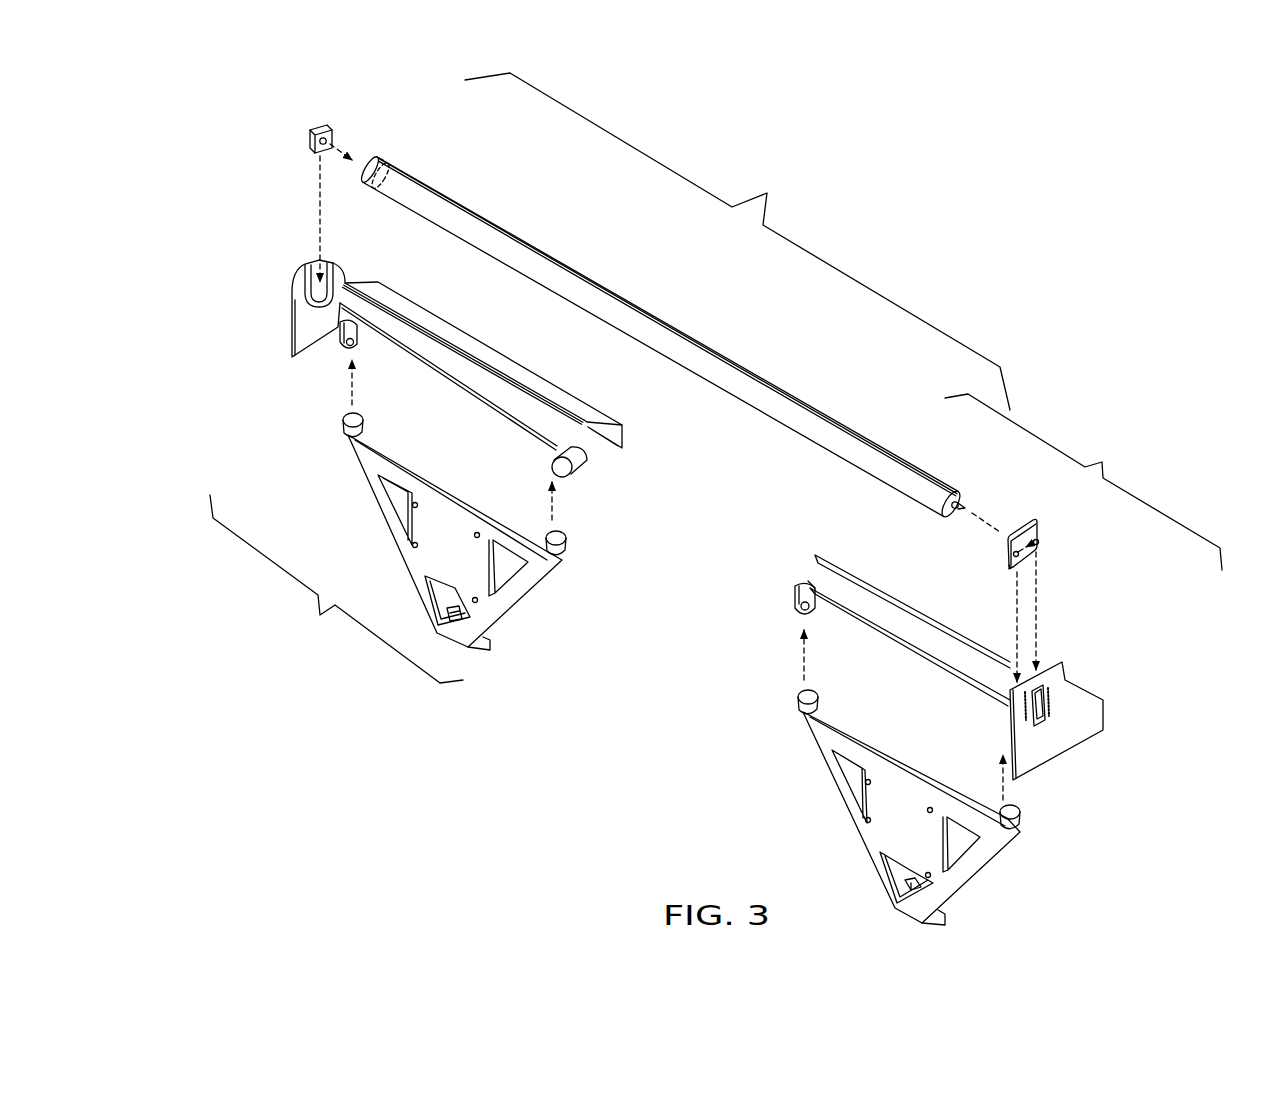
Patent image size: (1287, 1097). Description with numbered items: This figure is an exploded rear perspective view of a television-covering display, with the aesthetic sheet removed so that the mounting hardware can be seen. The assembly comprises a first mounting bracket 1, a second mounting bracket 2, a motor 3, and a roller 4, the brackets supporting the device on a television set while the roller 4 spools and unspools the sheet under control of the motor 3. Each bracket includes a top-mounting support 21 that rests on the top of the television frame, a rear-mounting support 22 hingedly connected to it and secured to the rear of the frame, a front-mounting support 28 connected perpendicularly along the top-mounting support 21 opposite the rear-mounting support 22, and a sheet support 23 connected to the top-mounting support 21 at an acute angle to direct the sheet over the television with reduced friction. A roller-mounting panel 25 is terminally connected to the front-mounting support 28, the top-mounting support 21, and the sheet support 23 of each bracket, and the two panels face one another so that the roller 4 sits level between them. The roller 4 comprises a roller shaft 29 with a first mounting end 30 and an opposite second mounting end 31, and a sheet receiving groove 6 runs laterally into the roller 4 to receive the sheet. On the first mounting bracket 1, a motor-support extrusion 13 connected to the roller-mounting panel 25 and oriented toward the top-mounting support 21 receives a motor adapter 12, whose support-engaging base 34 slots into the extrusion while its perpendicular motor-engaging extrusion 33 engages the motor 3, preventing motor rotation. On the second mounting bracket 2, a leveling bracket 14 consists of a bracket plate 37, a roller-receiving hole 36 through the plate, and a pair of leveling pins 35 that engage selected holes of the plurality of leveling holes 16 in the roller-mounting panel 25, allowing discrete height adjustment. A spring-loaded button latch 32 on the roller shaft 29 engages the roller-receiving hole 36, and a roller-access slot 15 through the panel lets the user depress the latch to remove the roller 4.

The first mounting bracket 1 is at (1083, 482).
The second mounting bracket 2 is at (336, 589).
The motor 3 is at (397, 175).
The roller 4 is at (737, 241).
The sheet receiving groove 6 is at (693, 337).
The motor adapter 12 is at (319, 178).
The motor-support extrusion 13 is at (305, 280).
The leveling bracket 14 is at (1038, 573).
The roller-access slot 15 is at (1084, 713).
The plurality of leveling holes 16 is at (1066, 707).
The top-mounting support 21 is at (583, 438).
The rear-mounting support 22 is at (488, 597).
The sheet support 23 is at (675, 494).
The roller-mounting panel 25 is at (677, 524).
The front-mounting support 28 is at (622, 437).
The roller shaft 29 is at (707, 367).
The first mounting end 30 is at (380, 156).
The second mounting end 31 is at (945, 507).
The spring-loaded button latch 32 is at (960, 506).
The motor-engaging extrusion 33 is at (330, 138).
The support-engaging base 34 is at (308, 130).
The pair of leveling pins 35 is at (1040, 543).
The roller-receiving hole 36 is at (1033, 538).
The bracket plate 37 is at (1013, 563).